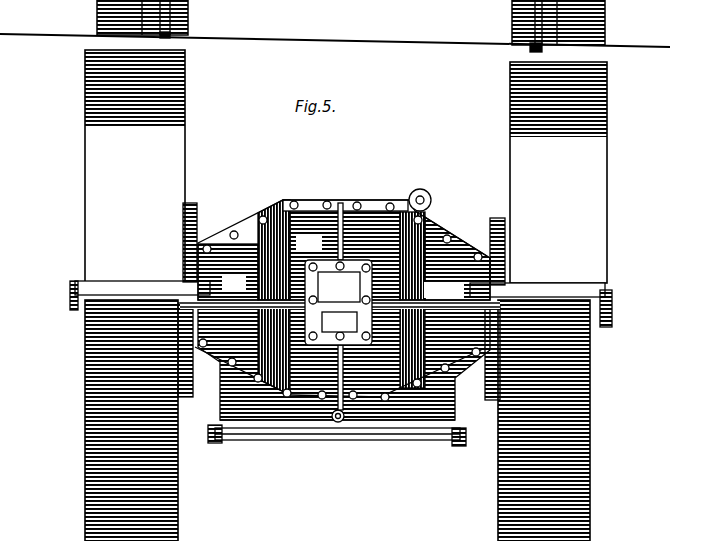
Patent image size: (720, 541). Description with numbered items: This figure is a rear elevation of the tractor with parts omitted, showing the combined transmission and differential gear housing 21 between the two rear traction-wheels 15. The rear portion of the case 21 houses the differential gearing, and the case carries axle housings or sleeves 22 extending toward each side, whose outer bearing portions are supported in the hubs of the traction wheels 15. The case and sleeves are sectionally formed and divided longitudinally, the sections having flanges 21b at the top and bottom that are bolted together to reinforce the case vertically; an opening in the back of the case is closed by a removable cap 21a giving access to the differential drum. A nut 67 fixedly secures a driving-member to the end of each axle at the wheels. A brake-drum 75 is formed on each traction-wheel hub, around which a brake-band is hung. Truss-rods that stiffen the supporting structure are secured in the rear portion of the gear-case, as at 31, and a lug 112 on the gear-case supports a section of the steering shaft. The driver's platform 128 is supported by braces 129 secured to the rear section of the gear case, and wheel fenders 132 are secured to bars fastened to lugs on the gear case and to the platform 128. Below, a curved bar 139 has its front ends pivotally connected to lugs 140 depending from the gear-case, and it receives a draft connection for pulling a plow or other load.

The rear traction-wheel 15 is at (86, 418).
The transmission and differential gear housing 21 is at (344, 250).
The removable cap 21a is at (338, 302).
The flange 21b is at (264, 451).
The axle housing 22 is at (228, 272).
The truss-rod securing point 31 is at (336, 423).
The nut 67 is at (70, 298).
The brake-drum 75 is at (190, 204).
The lug 112 is at (431, 198).
The driver's platform 128 is at (432, 312).
The brace 129 is at (339, 322).
The wheel fender 132 is at (92, 210).
The curved bar 139 is at (391, 441).
The lug 140 is at (217, 444).